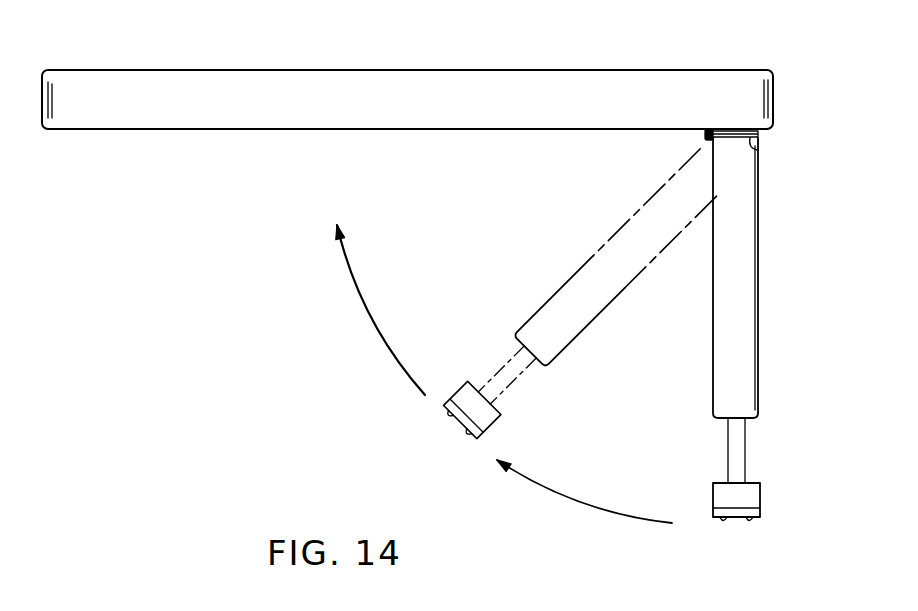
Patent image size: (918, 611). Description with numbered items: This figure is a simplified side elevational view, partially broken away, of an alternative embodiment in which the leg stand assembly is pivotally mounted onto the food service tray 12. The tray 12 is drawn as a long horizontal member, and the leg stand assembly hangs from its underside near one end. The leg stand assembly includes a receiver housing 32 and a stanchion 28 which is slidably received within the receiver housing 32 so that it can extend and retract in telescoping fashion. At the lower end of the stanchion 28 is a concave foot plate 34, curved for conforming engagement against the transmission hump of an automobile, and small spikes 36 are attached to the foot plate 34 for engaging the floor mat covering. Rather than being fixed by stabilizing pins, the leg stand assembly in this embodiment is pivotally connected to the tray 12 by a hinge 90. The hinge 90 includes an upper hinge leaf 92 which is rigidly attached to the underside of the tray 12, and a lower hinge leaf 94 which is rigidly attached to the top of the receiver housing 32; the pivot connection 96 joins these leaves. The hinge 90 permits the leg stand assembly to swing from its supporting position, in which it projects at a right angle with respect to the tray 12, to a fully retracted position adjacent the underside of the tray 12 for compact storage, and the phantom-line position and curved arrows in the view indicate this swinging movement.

The food service tray 12 is at (291, 70).
The stanchion 28 is at (748, 447).
The receiver housing 32 is at (721, 333).
The concave foot plate 34 is at (762, 495).
The small spikes 36 is at (750, 522).
The hinge 90 is at (684, 147).
The upper hinge leaf 92 is at (748, 130).
The lower hinge leaf 94 is at (757, 147).
The pivot pin 96 is at (710, 128).